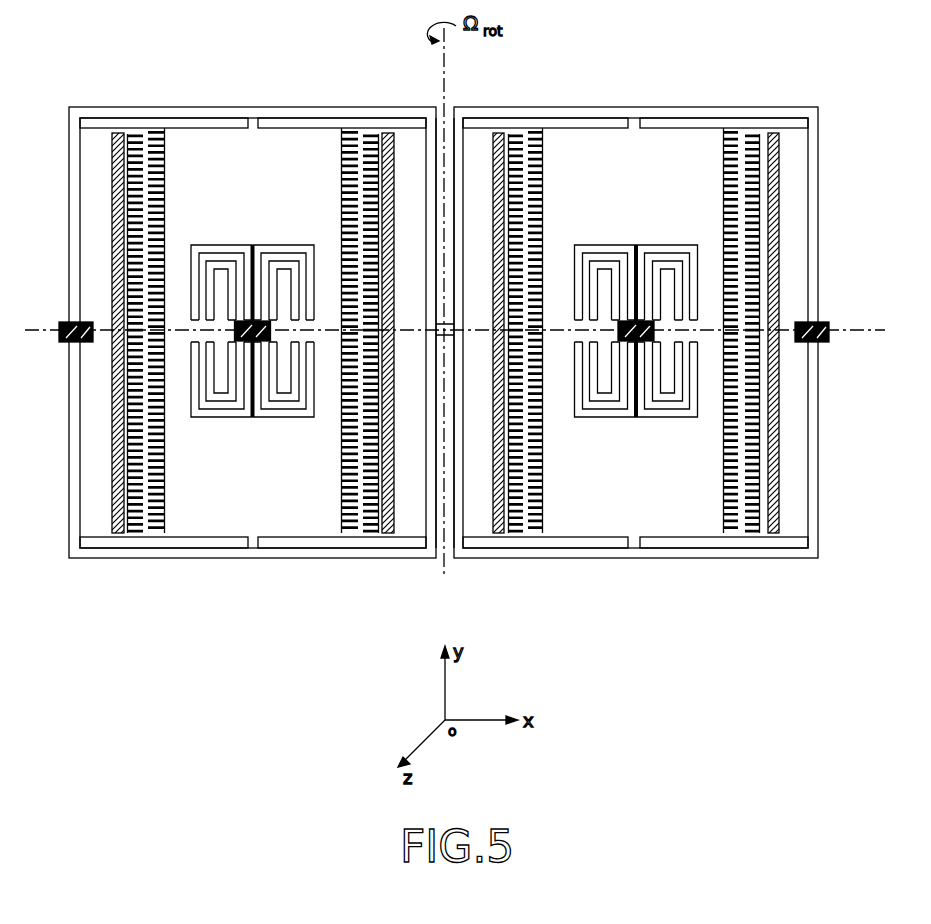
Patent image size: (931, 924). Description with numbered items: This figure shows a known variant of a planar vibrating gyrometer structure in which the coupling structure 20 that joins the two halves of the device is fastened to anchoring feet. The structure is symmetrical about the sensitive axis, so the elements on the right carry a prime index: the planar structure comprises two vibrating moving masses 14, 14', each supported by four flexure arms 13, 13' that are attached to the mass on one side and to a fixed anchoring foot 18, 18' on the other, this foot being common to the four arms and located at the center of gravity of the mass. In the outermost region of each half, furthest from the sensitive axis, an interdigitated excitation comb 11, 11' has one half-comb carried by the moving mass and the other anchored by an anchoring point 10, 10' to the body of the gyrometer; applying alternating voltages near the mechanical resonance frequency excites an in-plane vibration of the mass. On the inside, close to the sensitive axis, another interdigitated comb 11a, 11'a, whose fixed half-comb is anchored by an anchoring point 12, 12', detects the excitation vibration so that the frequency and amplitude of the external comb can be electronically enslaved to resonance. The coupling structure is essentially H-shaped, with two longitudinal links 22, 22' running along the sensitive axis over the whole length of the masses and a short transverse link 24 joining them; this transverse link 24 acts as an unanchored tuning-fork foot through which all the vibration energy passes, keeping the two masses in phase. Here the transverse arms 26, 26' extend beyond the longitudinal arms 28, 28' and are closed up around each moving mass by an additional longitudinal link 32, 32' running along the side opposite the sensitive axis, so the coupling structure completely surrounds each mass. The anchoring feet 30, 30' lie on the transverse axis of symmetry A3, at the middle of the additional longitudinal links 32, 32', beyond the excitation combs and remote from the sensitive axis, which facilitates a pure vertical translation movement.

The anchoring point 10 is at (102, 304).
The interdigitated comb 11 is at (146, 302).
The interdigitated comb 11a is at (359, 130).
The anchoring point 12 is at (398, 303).
The flexure arms 13 is at (252, 332).
The vibrating moving mass 14 is at (253, 553).
The anchoring foot 18 is at (285, 319).
The coupling structure 20 is at (433, 578).
The longitudinal link 22 is at (418, 333).
The transverse link 24 is at (452, 331).
The transverse arm 26 is at (253, 332).
The longitudinal arm 28 is at (260, 309).
The anchoring foot 30 is at (65, 349).
The additional longitudinal link 32 is at (235, 332).
The third axis of symmetry A3 is at (30, 323).
The anchoring point 10' is at (793, 303).
The interdigitated comb 11' is at (742, 303).
The interdigitated comb 11'a is at (551, 303).
The anchoring point 12' is at (514, 303).
The flexure arms 13' is at (636, 332).
The vibrating moving mass 14' is at (635, 553).
The anchoring foot 18' is at (671, 319).
The longitudinal link 22' is at (474, 333).
The transverse arm 26' is at (635, 355).
The longitudinal arm 28' is at (656, 524).
The anchoring foot 30' is at (831, 349).
The additional longitudinal link 32' is at (660, 332).